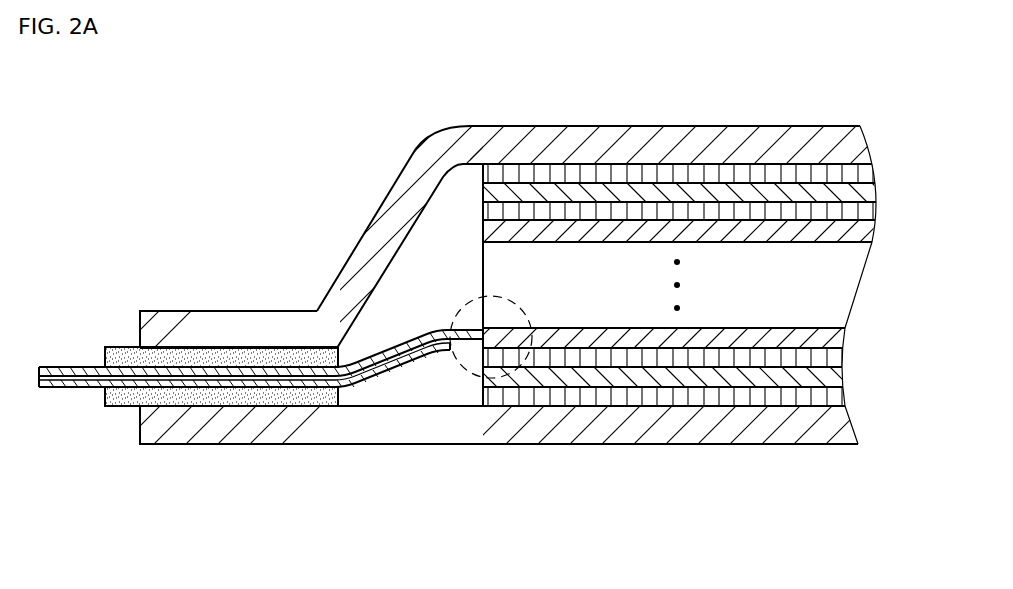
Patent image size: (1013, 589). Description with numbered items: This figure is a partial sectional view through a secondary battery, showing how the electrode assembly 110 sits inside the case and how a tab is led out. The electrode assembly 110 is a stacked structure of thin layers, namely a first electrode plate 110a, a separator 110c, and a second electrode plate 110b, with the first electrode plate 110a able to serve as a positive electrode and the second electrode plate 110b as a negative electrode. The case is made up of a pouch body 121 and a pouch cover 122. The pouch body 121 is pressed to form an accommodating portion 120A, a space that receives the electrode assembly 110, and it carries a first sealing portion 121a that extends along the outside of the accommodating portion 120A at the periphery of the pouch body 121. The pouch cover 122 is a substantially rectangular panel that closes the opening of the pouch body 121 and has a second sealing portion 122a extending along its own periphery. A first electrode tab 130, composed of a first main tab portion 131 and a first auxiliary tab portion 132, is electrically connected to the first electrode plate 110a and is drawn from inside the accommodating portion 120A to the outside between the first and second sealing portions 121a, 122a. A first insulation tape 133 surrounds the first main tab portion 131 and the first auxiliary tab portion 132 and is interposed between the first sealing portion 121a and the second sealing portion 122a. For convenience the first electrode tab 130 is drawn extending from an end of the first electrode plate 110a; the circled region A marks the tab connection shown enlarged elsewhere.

The pouch body 121 is at (691, 147).
The accommodating portion 120A is at (418, 293).
The first sealing portion 121a is at (177, 333).
The pouch cover 122 is at (508, 425).
The second sealing portion 122a is at (283, 425).
The first insulation tape 133 is at (113, 347).
The first electrode tab 130 is at (261, 452).
The first main tab portion 131 is at (356, 384).
The first auxiliary tab portion 132 is at (415, 360).
The electrode assembly 110 is at (671, 451).
The first electrode plate 110a is at (604, 340).
The separator 110c is at (697, 358).
The second electrode plate 110b is at (585, 522).
The portion A is at (465, 297).